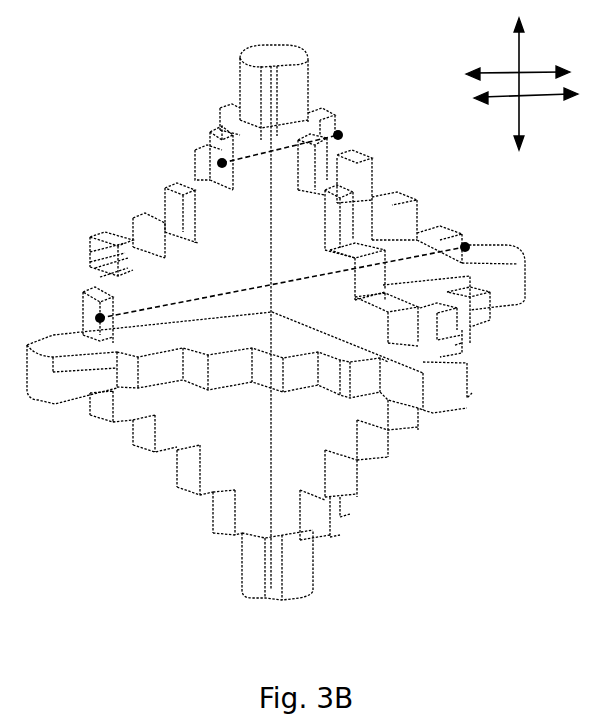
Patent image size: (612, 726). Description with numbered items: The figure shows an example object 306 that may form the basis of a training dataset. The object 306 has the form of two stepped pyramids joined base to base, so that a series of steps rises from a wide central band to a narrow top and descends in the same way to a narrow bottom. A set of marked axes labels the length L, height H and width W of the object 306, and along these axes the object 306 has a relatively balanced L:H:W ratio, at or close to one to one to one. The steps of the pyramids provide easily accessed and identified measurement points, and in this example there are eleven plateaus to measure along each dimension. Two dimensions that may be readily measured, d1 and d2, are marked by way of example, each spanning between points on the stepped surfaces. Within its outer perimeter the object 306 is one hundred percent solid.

The example object 306 is at (127, 103).
The measured dimension d1 is at (280, 149).
The measured dimension d2 is at (282, 282).
The height axis H is at (527, 84).
The length axis L is at (508, 72).
The width axis W is at (515, 103).